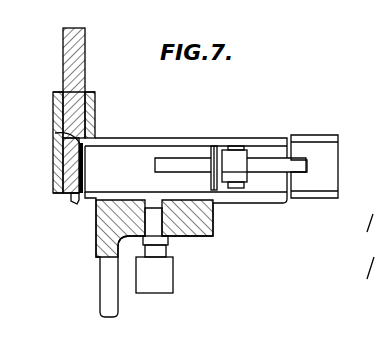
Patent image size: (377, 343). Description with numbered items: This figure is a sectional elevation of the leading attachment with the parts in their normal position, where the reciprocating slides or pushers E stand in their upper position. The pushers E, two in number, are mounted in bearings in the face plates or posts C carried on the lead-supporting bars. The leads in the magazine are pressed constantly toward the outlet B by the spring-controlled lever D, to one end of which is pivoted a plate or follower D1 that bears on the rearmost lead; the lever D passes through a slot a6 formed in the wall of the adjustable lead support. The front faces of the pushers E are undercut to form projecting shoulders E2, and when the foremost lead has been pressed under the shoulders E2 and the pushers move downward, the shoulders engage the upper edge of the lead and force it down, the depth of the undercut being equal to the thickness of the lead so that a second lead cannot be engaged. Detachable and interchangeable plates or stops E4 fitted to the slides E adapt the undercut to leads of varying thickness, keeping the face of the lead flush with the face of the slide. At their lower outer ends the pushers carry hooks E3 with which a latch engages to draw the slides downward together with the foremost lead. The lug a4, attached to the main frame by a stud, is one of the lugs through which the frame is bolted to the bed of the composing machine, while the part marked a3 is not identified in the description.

The pusher E is at (63, 47).
The face plate C is at (96, 97).
The projecting shoulder E2 is at (55, 133).
The hook E3 is at (76, 205).
The outlet B is at (85, 150).
The lug a4 is at (268, 195).
The plunger block a3 is at (170, 270).
The interchangeable plate E4 is at (100, 174).
The follower D1 is at (217, 152).
The lever D is at (239, 146).
The slot a6 is at (276, 166).